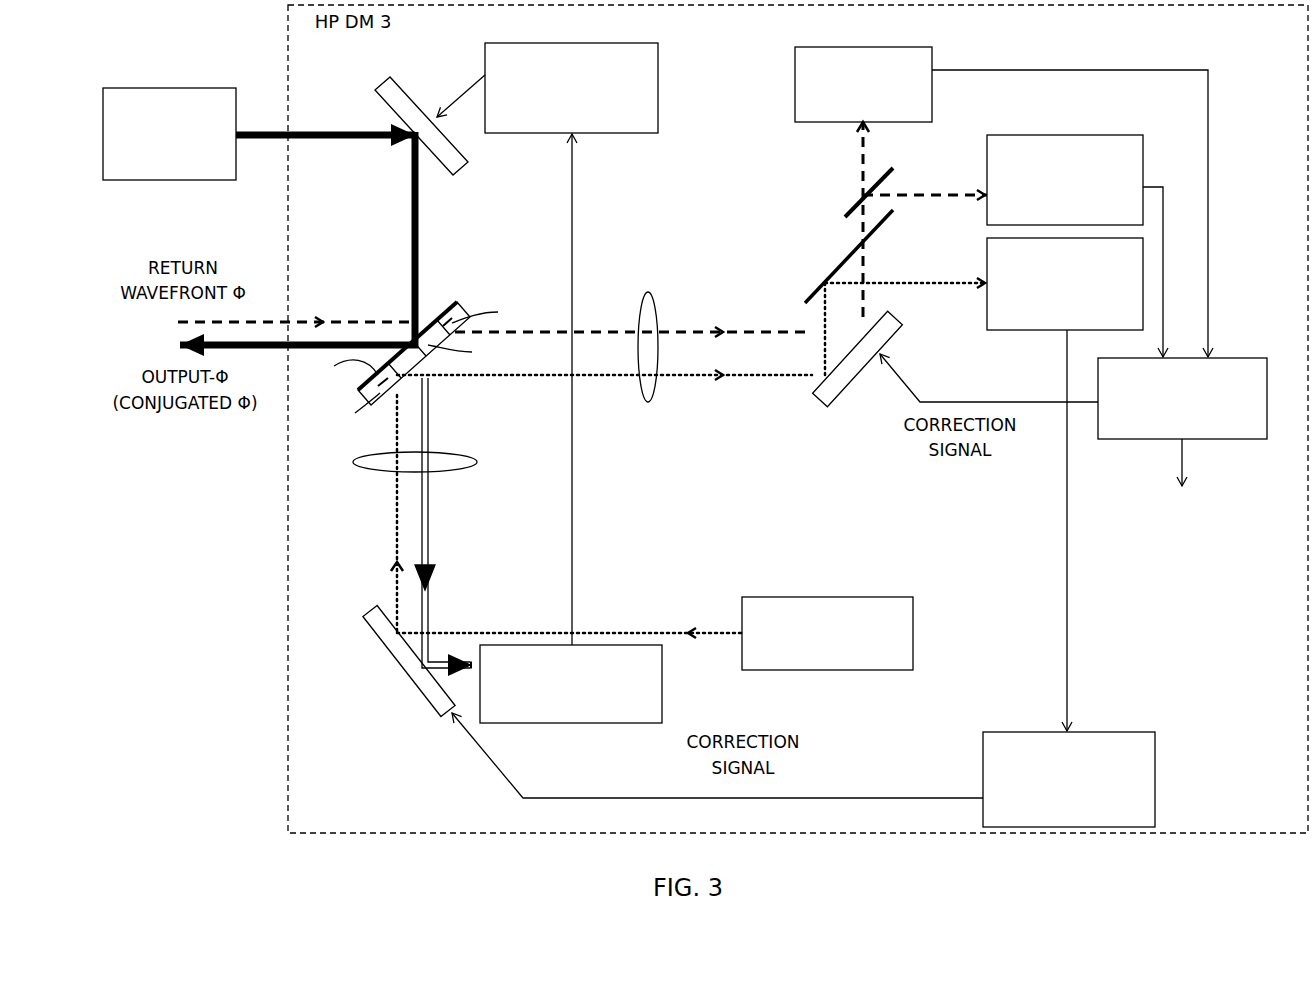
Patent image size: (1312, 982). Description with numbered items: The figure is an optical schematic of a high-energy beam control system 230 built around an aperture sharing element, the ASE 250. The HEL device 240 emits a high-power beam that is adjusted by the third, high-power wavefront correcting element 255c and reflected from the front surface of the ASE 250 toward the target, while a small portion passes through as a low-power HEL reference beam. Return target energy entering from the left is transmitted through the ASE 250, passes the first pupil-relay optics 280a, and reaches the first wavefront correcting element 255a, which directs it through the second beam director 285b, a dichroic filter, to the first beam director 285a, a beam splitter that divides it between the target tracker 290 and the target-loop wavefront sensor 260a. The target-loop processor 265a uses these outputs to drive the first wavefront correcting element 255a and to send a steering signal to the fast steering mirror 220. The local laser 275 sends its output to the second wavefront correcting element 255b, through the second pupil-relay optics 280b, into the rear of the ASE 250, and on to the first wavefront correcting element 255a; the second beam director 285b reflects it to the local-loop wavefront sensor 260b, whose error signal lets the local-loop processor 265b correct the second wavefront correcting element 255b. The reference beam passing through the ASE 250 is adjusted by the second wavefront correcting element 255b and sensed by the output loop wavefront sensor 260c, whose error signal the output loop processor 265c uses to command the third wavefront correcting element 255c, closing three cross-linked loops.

The high-energy electromagnetic beam control system 230 is at (288, 740).
The HEL device 240 is at (167, 88).
The third, high-power wavefront correcting element 255c is at (390, 77).
The third adaptive optics processor (output loop processor) 265c is at (568, 43).
The ASE (aperture sharing element) 250 is at (457, 288).
The first pupil-relay optics 280a is at (650, 293).
The second pupil-relay optics 280b is at (478, 462).
The first beam director (beam splitter) 285a is at (857, 198).
The second beam director (dichroic filter) 285b is at (840, 267).
The first wavefront correcting element 255a is at (825, 400).
The second wavefront correcting element 255b is at (378, 605).
The target tracker 290 is at (860, 47).
The first wavefront sensor (target-loop wavefront sensor) 260a is at (1063, 135).
The second wavefront sensor (local-loop wavefront sensor) 260b is at (1040, 330).
The third wavefront sensor (output loop wavefront sensor) 260c is at (600, 723).
The first adaptive optics processor (target-loop processor) 265a is at (1235, 358).
The second adaptive optics processor (local-loop processor) 265b is at (1125, 732).
The local laser 275 is at (870, 597).
The fast steering mirror 220 is at (1181, 488).